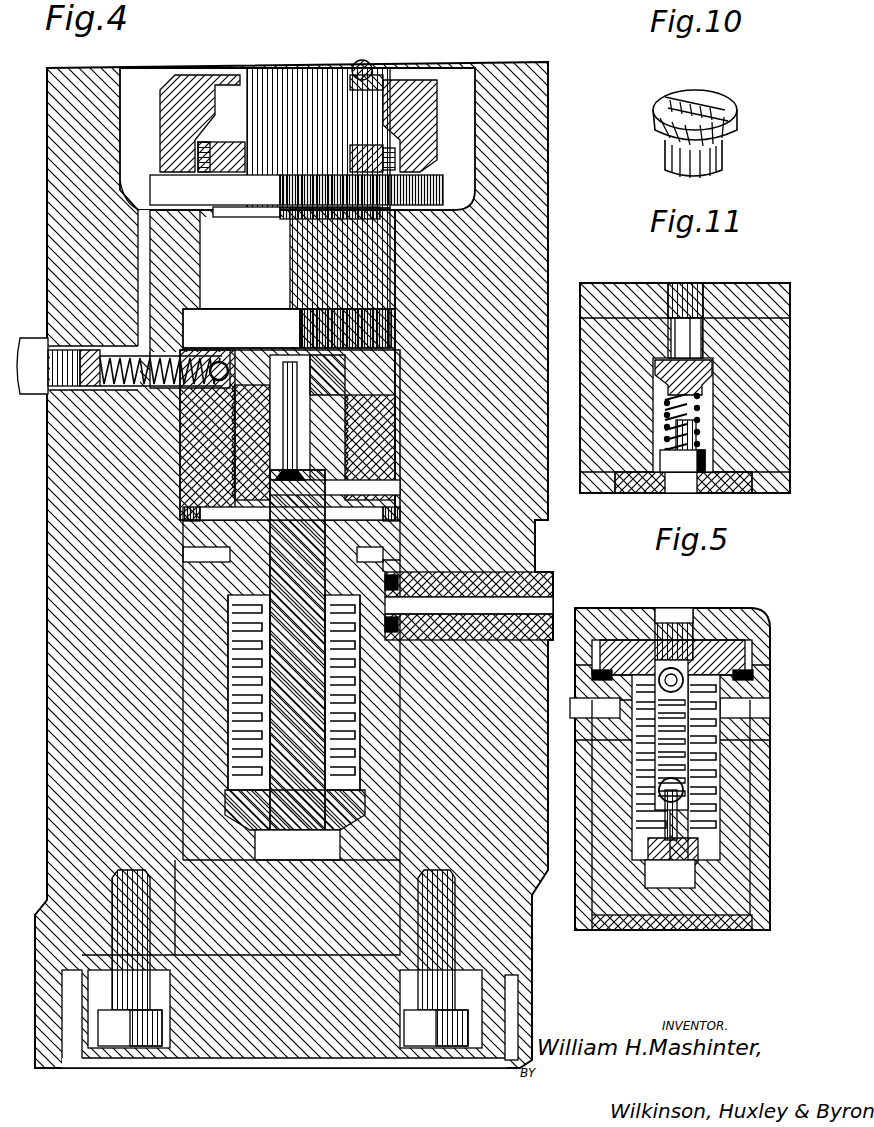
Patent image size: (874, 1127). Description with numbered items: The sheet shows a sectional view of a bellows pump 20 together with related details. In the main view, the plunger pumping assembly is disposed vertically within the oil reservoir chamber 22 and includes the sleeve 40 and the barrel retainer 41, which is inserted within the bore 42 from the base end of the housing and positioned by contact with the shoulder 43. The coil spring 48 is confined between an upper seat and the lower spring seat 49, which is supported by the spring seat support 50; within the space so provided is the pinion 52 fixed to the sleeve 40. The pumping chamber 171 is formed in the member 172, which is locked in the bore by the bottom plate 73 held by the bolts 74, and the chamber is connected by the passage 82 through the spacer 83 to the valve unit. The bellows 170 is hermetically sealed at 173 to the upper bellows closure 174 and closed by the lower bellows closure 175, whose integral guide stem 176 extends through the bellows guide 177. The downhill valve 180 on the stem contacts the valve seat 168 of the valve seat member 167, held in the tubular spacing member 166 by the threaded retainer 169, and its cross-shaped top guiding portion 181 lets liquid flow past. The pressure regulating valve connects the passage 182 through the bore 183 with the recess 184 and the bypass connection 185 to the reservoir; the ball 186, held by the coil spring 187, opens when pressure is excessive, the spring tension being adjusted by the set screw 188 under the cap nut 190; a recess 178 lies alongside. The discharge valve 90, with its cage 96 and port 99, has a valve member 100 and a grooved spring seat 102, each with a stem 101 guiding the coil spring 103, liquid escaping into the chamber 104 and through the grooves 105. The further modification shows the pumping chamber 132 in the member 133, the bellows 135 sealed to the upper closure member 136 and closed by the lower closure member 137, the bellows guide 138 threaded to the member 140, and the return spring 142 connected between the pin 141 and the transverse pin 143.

In FIG. 4, the body 20 is at (508, 60).
In FIG. 4, the oil reservoir chamber 22 is at (125, 75).
In FIG. 4, the sleeve 40 is at (285, 66).
In FIG. 4, the barrel retainer 41 is at (380, 262).
In FIG. 4, the bore 42 is at (180, 745).
In FIG. 5, the bore 42 is at (605, 910).
In FIG. 4, the shoulder 43 is at (400, 318).
In FIG. 4, the coil spring 48 is at (363, 60).
In FIG. 4, the lower spring seat 49 is at (402, 86).
In FIG. 4, the spring seat support 50 is at (445, 190).
In FIG. 4, the pinion 52 is at (199, 140).
In FIG. 4, the bottom plate 73 is at (242, 1048).
In FIG. 4, the bolts 74 is at (130, 1045).
In FIG. 4, the passage 82 is at (480, 600).
In FIG. 4, the spacer 83 is at (466, 625).
In FIG. 11, the spring-loaded discharge valve 90 is at (660, 390).
In FIG. 11, the cage 96 is at (722, 490).
In FIG. 11, the port 99 is at (668, 492).
In FIG. 11, the valve member 100 is at (707, 460).
In FIG. 11, the stem 101 is at (700, 402).
In FIG. 10, the grooved spring seat 102 is at (722, 118).
In FIG. 11, the grooved spring seat 102 is at (690, 320).
In FIG. 11, the coil spring 103 is at (672, 428).
In FIG. 11, the chamber 104 is at (660, 440).
In FIG. 10, the grooves 105 is at (655, 140).
In FIG. 5, the pumping chamber 132 is at (705, 840).
In FIG. 5, the member 133 is at (725, 873).
In FIG. 5, the bellows 135 is at (708, 762).
In FIG. 5, the upper closure member 136 is at (720, 662).
In FIG. 5, the lower closure member 137 is at (680, 870).
In FIG. 5, the bellows guide 138 is at (640, 765).
In FIG. 5, the member 140 is at (700, 645).
In FIG. 5, the pin 141 is at (660, 830).
In FIG. 5, the return spring 142 is at (665, 738).
In FIG. 5, the pin 143 is at (685, 646).
In FIG. 4, the tubular spacing member 166 is at (400, 382).
In FIG. 4, the valve seat member 167 is at (345, 412).
In FIG. 4, the valve seat 168 is at (312, 473).
In FIG. 4, the threaded retainer 169 is at (340, 440).
In FIG. 4, the bellows 170 is at (345, 677).
In FIG. 4, the pumping chamber 171 is at (355, 707).
In FIG. 4, the member 172 is at (390, 756).
In FIG. 4, the hermetic seal 173 is at (415, 560).
In FIG. 4, the upper bellows closure 174 is at (400, 540).
In FIG. 4, the lower bellows closure 175 is at (225, 796).
In FIG. 4, the guide stem 176 is at (245, 647).
In FIG. 4, the bellows guide 177 is at (210, 695).
In FIG. 4, the recess 178 is at (262, 556).
In FIG. 4, the downhill valve 180 is at (240, 480).
In FIG. 4, the top guiding portion 181 is at (245, 427).
In FIG. 4, the passage 182 is at (288, 355).
In FIG. 4, the bore 183 is at (260, 355).
In FIG. 4, the recess 184 is at (140, 378).
In FIG. 4, the bypass connection 185 is at (140, 240).
In FIG. 4, the ball 186 is at (222, 360).
In FIG. 4, the coil spring 187 is at (118, 345).
In FIG. 4, the set screw 188 is at (110, 380).
In FIG. 4, the cap nut 190 is at (38, 336).